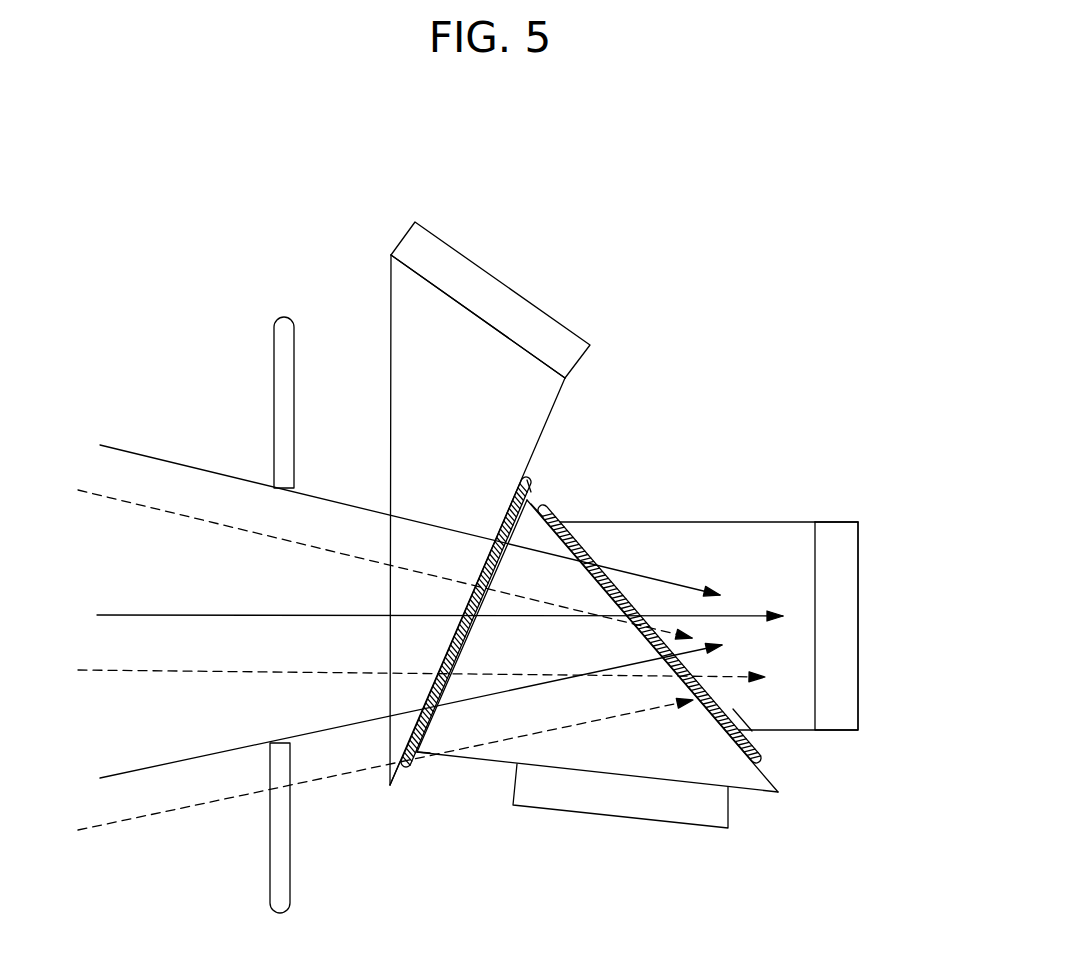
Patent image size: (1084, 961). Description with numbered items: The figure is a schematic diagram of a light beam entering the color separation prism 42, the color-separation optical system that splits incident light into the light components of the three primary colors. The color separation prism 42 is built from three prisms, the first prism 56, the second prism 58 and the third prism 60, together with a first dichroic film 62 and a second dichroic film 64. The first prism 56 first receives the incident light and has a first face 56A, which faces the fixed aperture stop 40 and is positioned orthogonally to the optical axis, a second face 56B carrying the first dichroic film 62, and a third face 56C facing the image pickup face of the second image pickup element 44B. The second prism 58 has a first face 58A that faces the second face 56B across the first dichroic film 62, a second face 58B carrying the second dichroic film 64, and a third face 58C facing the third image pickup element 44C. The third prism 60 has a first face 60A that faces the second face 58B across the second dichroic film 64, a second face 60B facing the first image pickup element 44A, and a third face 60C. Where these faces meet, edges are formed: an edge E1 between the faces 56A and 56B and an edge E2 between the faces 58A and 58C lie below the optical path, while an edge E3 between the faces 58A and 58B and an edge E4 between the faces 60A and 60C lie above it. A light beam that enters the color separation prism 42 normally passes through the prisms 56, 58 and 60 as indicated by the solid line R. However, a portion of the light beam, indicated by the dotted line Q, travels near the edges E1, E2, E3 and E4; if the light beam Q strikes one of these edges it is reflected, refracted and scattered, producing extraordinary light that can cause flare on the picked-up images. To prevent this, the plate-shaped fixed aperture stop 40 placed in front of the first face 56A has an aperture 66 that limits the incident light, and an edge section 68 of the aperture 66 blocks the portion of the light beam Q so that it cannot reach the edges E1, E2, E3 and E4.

The fixed aperture stop 40 is at (266, 598).
The color separation prism 42 is at (621, 535).
The first image pickup element 44A is at (857, 630).
The second image pickup element 44B is at (453, 257).
The third image pickup element 44C is at (660, 822).
The first prism 56 is at (484, 511).
The first face of first prism 56A is at (388, 352).
The second face of first prism 56B is at (547, 427).
The third face of first prism 56C is at (503, 335).
The second prism 58 is at (604, 710).
The first face of second prism 58A is at (400, 760).
The second face of second prism 58B is at (770, 783).
The third face of second prism 58C is at (497, 762).
The third prism 60 is at (739, 560).
The first face of third prism 60A is at (606, 604).
The second face of third prism 60B is at (817, 568).
The third face of third prism 60C is at (773, 522).
The first dichroic film 62 is at (508, 515).
The second dichroic film 64 is at (727, 709).
The aperture 66 is at (282, 488).
The edge section 68 is at (294, 463).
The edge E1 is at (388, 786).
The edge E2 is at (417, 754).
The edge E3 is at (530, 492).
The edge E4 is at (543, 517).
The light beam Q is at (238, 670).
The light beam R is at (152, 768).